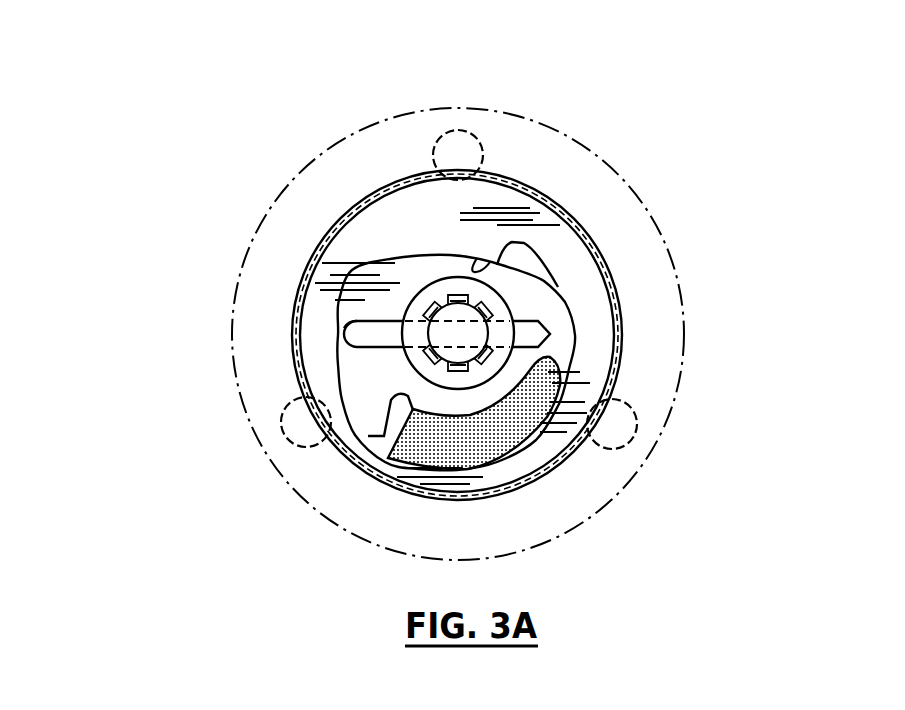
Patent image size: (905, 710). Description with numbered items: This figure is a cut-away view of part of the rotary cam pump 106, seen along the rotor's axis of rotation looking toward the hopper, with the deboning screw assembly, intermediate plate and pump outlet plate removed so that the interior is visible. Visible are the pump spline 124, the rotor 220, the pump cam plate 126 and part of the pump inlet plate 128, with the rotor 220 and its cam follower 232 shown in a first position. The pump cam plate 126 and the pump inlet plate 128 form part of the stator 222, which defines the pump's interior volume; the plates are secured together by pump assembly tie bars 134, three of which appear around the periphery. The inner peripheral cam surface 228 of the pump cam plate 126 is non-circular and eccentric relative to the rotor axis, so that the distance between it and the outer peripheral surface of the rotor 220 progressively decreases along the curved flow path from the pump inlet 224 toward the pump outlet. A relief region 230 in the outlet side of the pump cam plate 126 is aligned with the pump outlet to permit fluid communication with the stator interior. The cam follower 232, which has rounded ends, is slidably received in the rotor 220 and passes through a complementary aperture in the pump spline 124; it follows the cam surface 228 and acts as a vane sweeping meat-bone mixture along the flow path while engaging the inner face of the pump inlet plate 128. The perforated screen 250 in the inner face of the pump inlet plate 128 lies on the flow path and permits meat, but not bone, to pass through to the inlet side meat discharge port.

The rotary cam pump 106 is at (226, 148).
The pump spline 124 is at (478, 333).
The pump cam plate 126 is at (375, 242).
The pump inlet plate 128 is at (372, 300).
The pump assembly tie bars 134 is at (455, 163).
The rotor 220 is at (440, 300).
The stator 222 is at (563, 195).
The pump inlet 224 is at (392, 398).
The inner peripheral cam surface 228 is at (477, 258).
The relief region 230 is at (540, 288).
The cam follower 232 is at (347, 332).
The perforated screen 250 is at (498, 428).